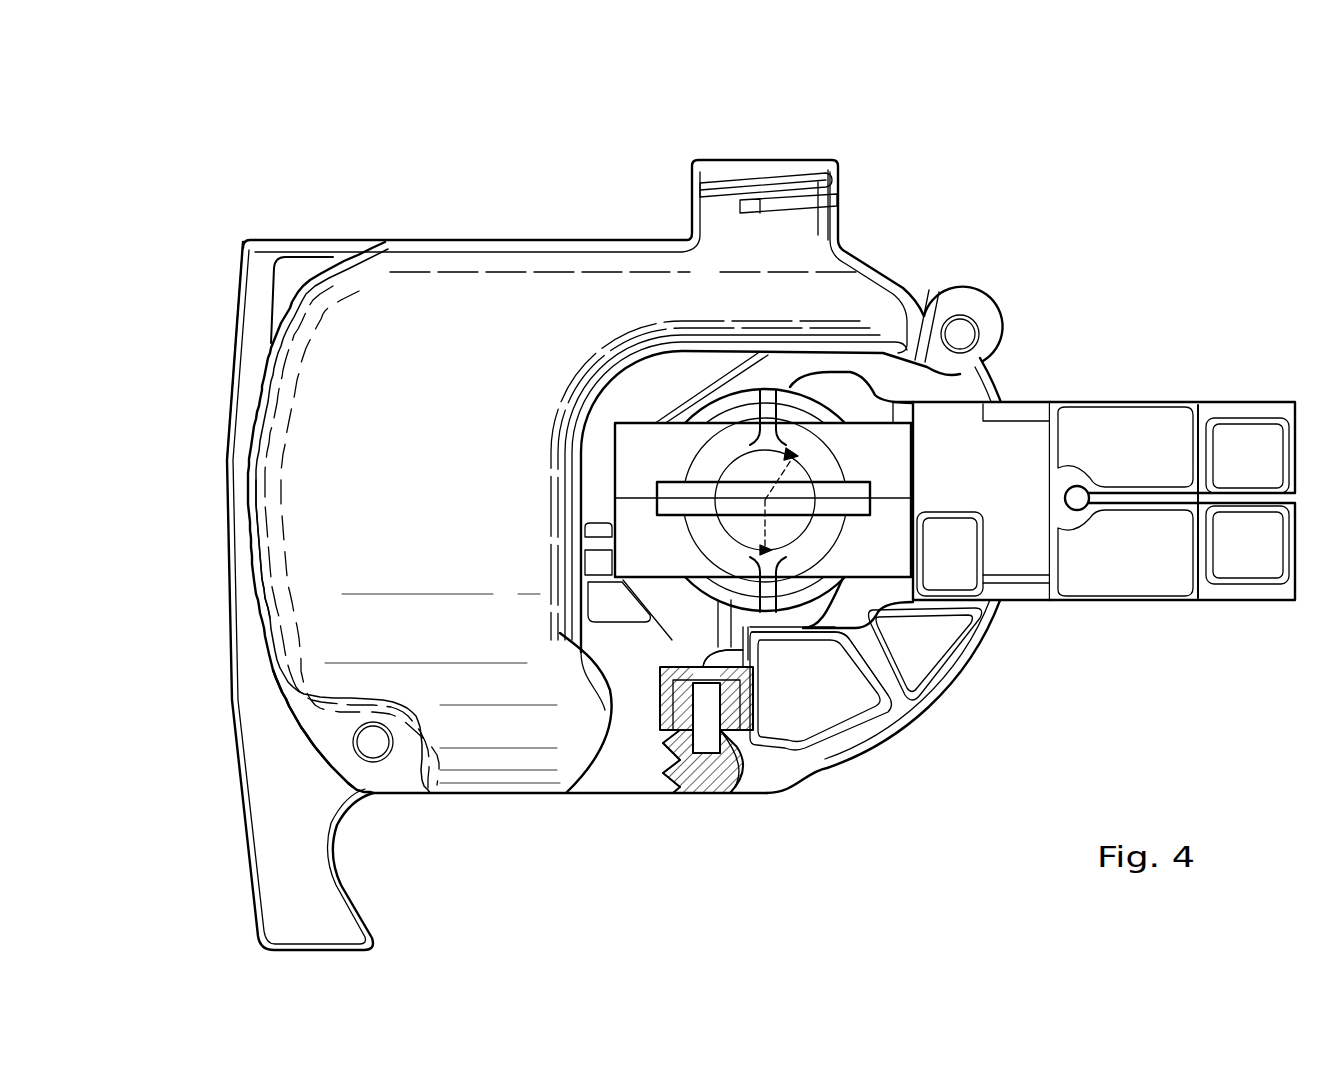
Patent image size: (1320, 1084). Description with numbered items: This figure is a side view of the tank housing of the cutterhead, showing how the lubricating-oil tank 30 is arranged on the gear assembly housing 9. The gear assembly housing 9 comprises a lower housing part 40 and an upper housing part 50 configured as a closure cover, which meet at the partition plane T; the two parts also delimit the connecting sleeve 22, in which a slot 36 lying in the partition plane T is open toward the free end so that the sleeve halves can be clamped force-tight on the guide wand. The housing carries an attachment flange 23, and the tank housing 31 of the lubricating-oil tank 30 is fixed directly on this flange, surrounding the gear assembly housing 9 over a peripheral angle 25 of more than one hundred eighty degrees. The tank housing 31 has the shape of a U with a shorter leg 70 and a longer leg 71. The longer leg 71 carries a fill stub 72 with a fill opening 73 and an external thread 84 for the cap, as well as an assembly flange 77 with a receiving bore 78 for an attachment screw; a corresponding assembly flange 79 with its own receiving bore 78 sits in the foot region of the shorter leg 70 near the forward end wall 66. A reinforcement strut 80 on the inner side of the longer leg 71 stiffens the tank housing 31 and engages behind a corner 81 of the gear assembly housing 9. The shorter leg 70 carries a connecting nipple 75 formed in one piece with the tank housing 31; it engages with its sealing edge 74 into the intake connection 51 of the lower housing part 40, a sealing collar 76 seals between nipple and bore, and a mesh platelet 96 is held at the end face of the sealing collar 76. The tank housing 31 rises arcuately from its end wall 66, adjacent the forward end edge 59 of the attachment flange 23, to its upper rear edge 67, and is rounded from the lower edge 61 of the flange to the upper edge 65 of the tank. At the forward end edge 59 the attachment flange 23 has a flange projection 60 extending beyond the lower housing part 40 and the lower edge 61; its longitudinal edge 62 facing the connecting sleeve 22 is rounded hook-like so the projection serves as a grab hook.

The gear assembly housing 9 is at (898, 410).
The connecting sleeve 22 is at (1246, 440).
The attachment flange 23 is at (290, 268).
The peripheral angle 25 is at (736, 468).
The lubricating-oil tank 30 is at (418, 300).
The tank housing 31 is at (410, 479).
The slot 36 is at (1147, 500).
The lower housing part 40 is at (958, 583).
The upper housing part 50 is at (1020, 430).
The intake connection 51 is at (757, 710).
The forward end edge 59 is at (228, 455).
The flange projection 60 is at (287, 905).
The lower edge 61 is at (533, 796).
The longitudinal edge 62 is at (340, 877).
The upper edge 65 is at (537, 240).
The end wall 66 is at (262, 578).
The upper rear edge 67 is at (562, 640).
The shorter leg 70 is at (665, 778).
The longer leg 71 is at (875, 282).
The fill stub 72 is at (823, 220).
The fill opening 73 is at (822, 158).
The sealing edge 74 is at (755, 680).
The connecting nipple 75 is at (718, 722).
The sealing collar 76 is at (740, 705).
The assembly flange 77 is at (987, 330).
The receiving bore 78 is at (958, 325).
The assembly flange 79 is at (320, 737).
The reinforcement strut 80 is at (637, 400).
The corner 81 is at (620, 437).
The external thread 84 is at (722, 190).
The mesh platelet 96 is at (703, 665).
The partition plane T is at (1020, 520).